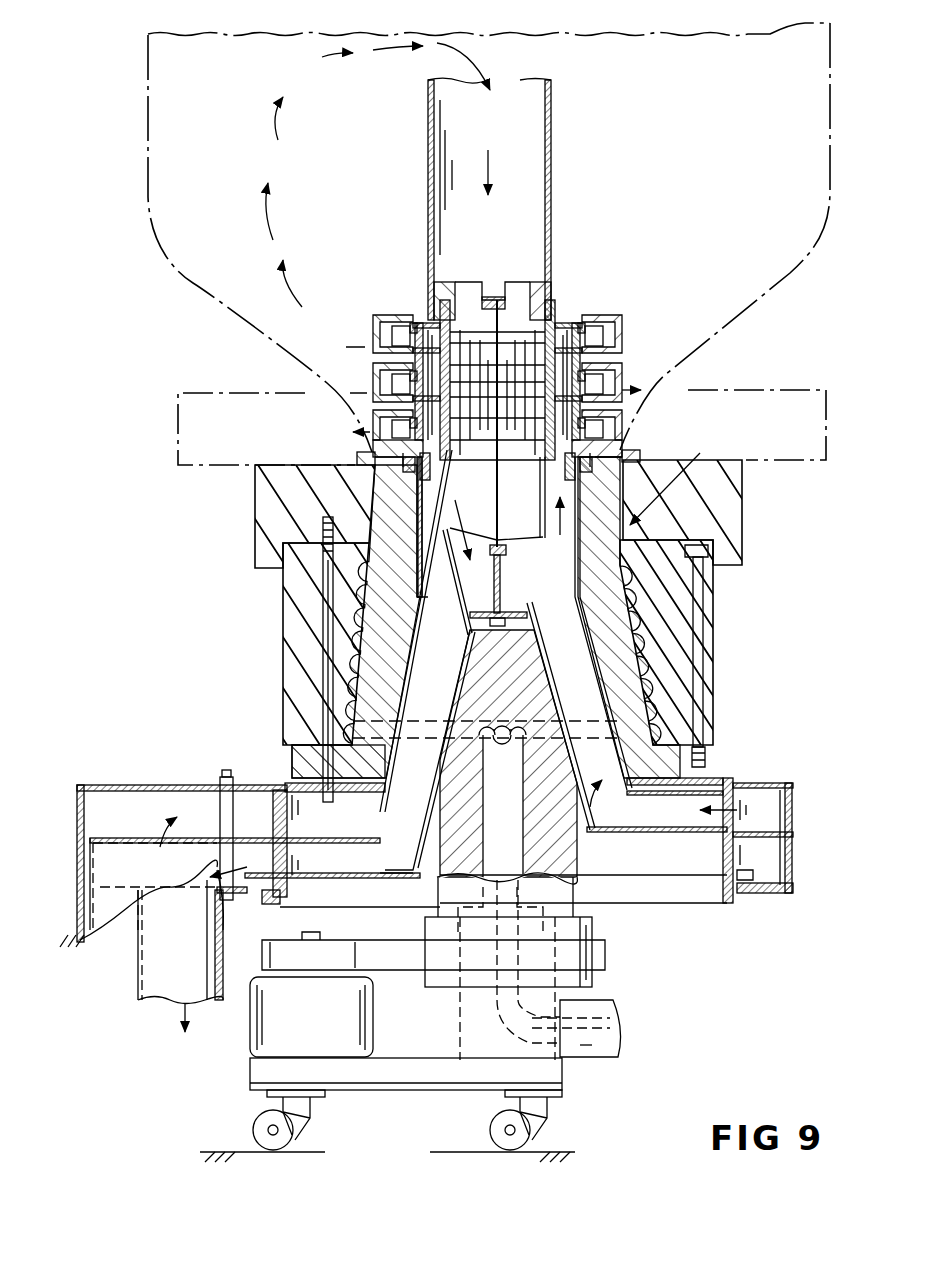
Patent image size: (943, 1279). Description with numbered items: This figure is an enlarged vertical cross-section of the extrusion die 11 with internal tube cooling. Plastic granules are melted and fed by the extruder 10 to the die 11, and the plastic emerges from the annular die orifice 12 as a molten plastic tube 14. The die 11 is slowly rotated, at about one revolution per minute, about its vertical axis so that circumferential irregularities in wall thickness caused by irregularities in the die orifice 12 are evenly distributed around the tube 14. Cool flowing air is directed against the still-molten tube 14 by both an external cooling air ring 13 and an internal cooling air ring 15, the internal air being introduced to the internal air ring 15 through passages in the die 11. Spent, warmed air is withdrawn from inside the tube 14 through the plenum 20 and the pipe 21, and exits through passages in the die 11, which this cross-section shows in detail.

The extruder 10 is at (603, 1057).
The die 11 is at (270, 630).
The annular die orifice 12 is at (360, 463).
The external cooling air ring 13 is at (193, 392).
The molten plastic tube 14 is at (150, 140).
The internal cooling air ring 15 is at (377, 305).
The plenum 20 is at (138, 783).
The pipe 21 is at (430, 187).